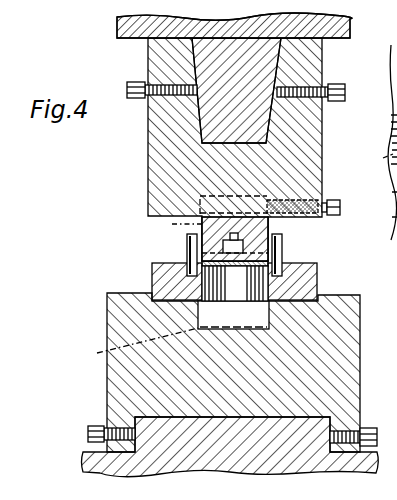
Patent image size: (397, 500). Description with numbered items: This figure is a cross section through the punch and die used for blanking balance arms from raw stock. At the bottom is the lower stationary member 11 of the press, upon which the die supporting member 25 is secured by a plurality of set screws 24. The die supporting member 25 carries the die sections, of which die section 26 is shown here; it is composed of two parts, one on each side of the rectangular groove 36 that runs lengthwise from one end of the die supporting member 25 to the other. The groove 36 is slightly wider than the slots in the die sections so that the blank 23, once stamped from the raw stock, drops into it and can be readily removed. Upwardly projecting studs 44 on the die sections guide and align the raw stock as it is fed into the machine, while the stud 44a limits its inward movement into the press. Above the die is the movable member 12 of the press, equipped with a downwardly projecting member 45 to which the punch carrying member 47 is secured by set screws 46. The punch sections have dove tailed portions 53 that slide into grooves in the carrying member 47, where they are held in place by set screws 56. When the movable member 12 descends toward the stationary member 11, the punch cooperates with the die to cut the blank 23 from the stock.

The lower stationary member 11 is at (238, 460).
The movable member 12 is at (352, 24).
The blank 23 is at (152, 278).
The set screws 24 is at (95, 424).
The die supporting member 25 is at (115, 329).
The die section 26 is at (317, 278).
The rectangular groove 36 is at (207, 308).
The studs 44 is at (187, 243).
The stud 44a is at (266, 193).
The downwardly projecting member 45 is at (200, 47).
The set screws 46 is at (127, 86).
The punch carrying member 47 is at (317, 135).
The dove tailed portions 53 is at (202, 203).
The set screws 56 is at (350, 197).